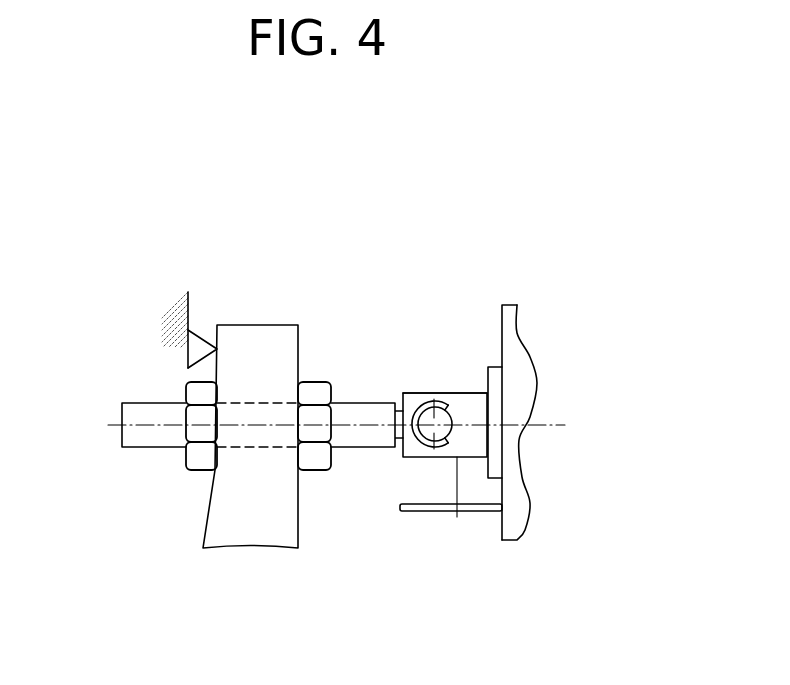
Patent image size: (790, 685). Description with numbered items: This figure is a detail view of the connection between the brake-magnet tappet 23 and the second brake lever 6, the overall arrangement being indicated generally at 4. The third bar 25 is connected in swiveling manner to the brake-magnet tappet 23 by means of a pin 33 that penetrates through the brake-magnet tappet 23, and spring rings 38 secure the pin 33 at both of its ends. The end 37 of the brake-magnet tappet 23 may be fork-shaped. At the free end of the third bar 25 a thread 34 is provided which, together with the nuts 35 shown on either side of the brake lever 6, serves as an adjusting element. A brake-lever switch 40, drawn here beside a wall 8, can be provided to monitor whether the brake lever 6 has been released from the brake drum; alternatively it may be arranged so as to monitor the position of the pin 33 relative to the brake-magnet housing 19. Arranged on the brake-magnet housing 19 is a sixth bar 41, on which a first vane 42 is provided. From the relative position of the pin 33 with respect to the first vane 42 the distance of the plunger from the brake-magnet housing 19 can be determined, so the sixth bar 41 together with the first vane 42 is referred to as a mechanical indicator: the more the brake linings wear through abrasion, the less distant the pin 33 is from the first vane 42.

The mounting arrangement 4 is at (598, 310).
The second brake lever 6 is at (267, 343).
The housing wall 8 is at (177, 312).
The brake-magnet housing 19 is at (513, 540).
The brake-magnet tappet 23 is at (467, 372).
The third bar 25 is at (375, 410).
The pin 33 is at (426, 417).
The thread 34 is at (140, 440).
The nuts 35 is at (203, 458).
The end of the brake-magnet tappet 37 is at (440, 393).
The spring rings 38 is at (427, 443).
The brake-lever switch 40 is at (203, 340).
The sixth bar 41 is at (430, 510).
The first vane 42 is at (458, 480).